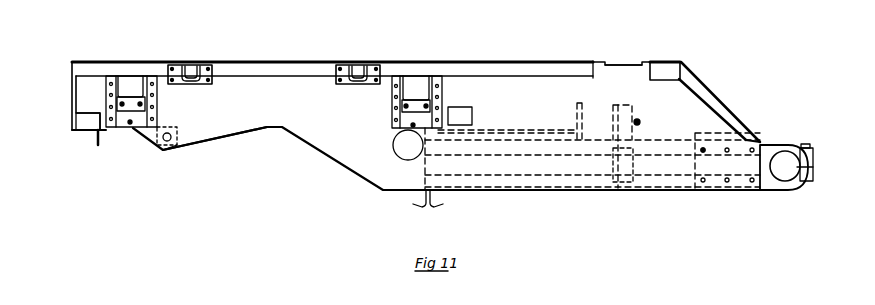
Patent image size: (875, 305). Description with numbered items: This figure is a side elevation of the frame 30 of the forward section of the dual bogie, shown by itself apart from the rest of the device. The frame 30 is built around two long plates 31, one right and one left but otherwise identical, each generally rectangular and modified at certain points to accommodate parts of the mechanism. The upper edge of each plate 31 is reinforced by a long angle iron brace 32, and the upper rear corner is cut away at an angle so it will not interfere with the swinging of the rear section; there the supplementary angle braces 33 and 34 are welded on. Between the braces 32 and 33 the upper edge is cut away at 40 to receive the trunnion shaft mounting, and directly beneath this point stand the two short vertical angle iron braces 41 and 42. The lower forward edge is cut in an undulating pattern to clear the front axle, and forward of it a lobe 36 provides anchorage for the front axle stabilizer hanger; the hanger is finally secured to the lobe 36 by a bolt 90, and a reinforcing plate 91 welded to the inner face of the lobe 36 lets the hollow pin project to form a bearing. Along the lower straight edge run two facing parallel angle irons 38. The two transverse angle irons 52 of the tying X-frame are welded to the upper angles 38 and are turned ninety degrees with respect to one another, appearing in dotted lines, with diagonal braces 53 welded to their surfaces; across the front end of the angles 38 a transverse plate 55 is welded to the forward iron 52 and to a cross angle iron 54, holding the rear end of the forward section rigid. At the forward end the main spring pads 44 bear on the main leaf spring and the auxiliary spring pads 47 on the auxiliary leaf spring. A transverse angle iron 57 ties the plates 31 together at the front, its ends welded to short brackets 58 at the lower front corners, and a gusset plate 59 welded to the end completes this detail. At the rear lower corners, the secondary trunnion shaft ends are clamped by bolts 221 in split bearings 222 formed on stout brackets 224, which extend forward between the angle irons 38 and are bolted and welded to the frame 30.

The frame 30 is at (290, 62).
The plate 31 is at (680, 105).
The angle iron brace 32 is at (503, 72).
The supplementary angle brace 33 is at (678, 63).
The supplementary angle brace 34 is at (723, 100).
The lobe 36 is at (167, 152).
The angle iron 38 is at (735, 135).
The cut-away 40 is at (626, 63).
The vertical angle iron brace 41 is at (615, 187).
The vertical angle iron brace 42 is at (667, 62).
The main spring pad 44 is at (134, 88).
The auxiliary spring pad 47 is at (188, 72).
The transverse angle iron 52 is at (467, 133).
The diagonal brace 53 is at (527, 133).
The cross angle iron 54 is at (438, 205).
The transverse plate 55 is at (417, 205).
The transverse angle iron 57 is at (98, 145).
The bracket 58 is at (85, 110).
The gusset plate 59 is at (72, 86).
The bolt 90 is at (163, 150).
The reinforcing plate 91 is at (178, 146).
The bolt 221 is at (812, 148).
The split bearing 222 is at (796, 185).
The bracket 224 is at (790, 146).